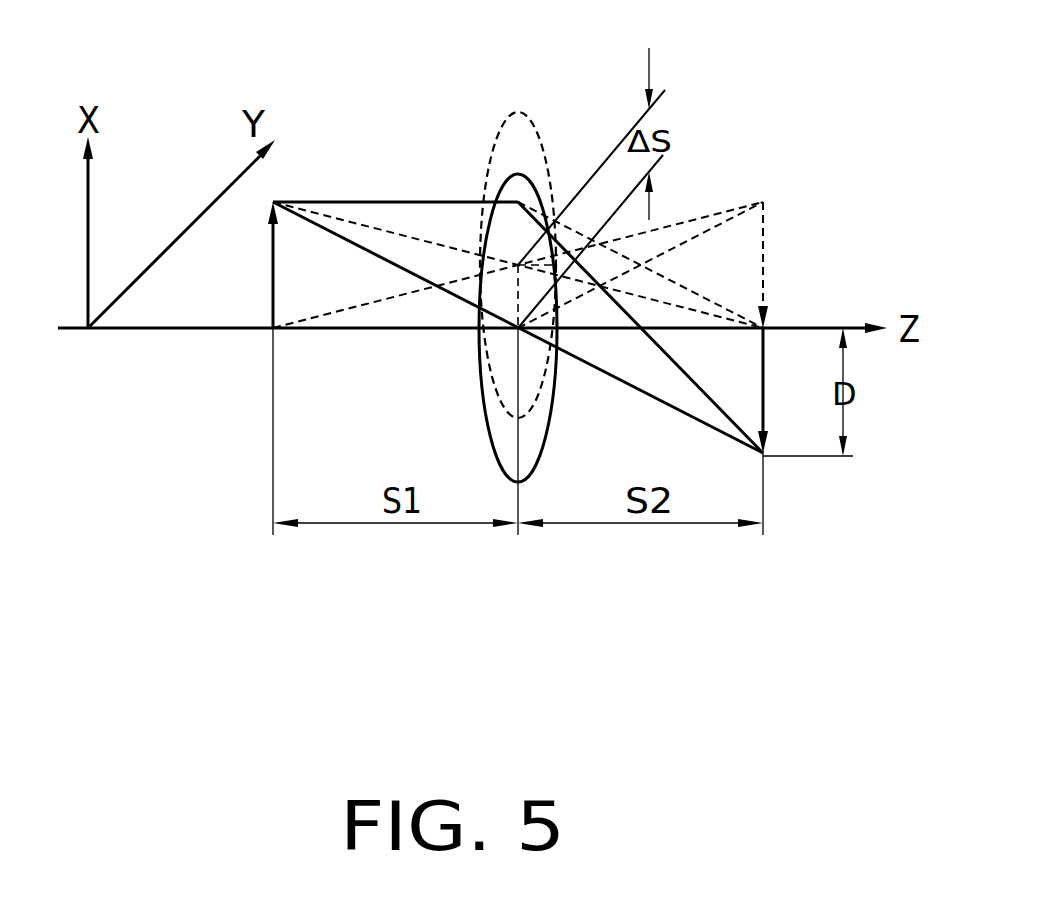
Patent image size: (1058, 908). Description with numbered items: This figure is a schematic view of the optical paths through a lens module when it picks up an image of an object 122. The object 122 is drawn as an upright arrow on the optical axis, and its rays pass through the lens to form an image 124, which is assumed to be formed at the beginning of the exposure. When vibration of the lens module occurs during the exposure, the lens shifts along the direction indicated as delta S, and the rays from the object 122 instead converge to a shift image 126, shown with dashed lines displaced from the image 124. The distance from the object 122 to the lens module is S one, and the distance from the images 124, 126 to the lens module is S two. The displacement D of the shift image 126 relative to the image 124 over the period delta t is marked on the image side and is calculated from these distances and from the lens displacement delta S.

The object 122 is at (275, 265).
The image 124 is at (763, 383).
The shift image 126 is at (763, 262).